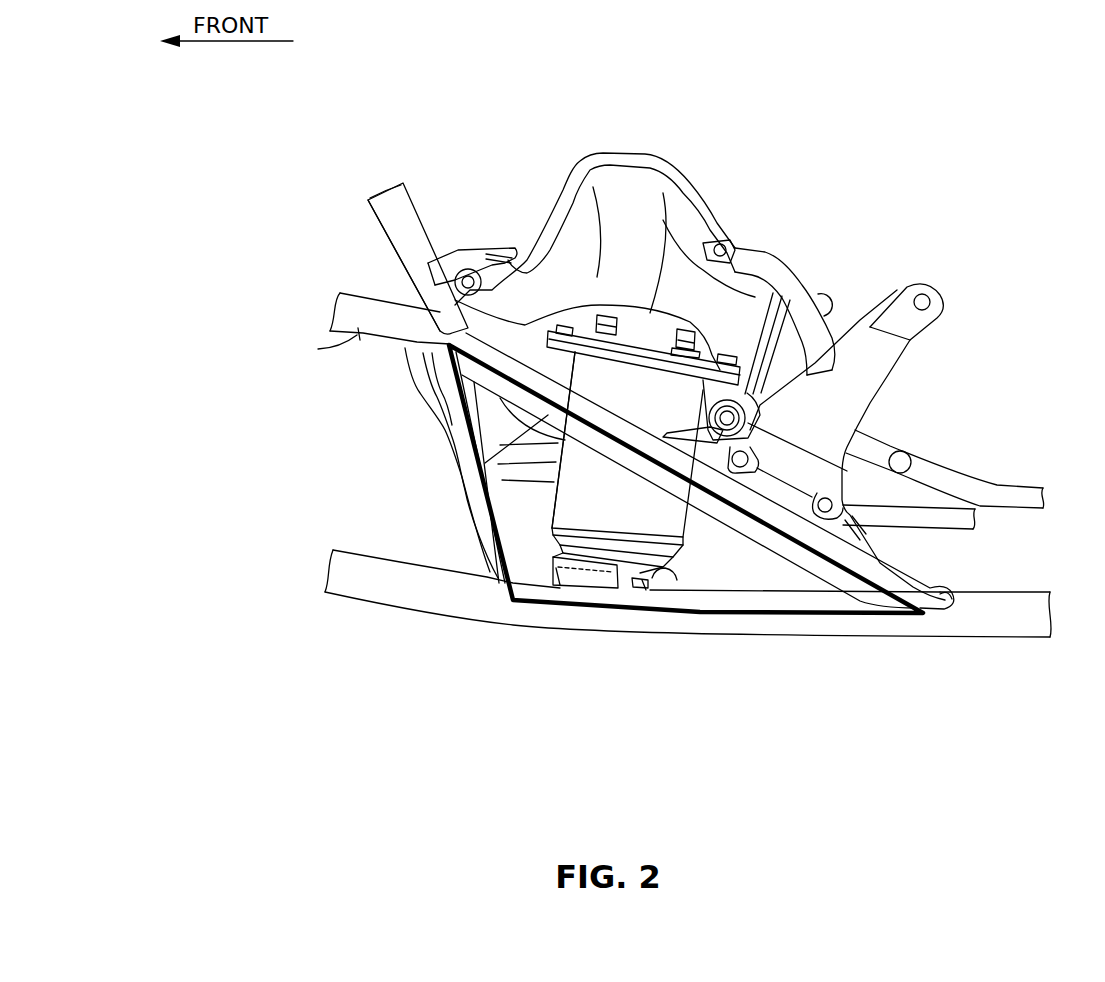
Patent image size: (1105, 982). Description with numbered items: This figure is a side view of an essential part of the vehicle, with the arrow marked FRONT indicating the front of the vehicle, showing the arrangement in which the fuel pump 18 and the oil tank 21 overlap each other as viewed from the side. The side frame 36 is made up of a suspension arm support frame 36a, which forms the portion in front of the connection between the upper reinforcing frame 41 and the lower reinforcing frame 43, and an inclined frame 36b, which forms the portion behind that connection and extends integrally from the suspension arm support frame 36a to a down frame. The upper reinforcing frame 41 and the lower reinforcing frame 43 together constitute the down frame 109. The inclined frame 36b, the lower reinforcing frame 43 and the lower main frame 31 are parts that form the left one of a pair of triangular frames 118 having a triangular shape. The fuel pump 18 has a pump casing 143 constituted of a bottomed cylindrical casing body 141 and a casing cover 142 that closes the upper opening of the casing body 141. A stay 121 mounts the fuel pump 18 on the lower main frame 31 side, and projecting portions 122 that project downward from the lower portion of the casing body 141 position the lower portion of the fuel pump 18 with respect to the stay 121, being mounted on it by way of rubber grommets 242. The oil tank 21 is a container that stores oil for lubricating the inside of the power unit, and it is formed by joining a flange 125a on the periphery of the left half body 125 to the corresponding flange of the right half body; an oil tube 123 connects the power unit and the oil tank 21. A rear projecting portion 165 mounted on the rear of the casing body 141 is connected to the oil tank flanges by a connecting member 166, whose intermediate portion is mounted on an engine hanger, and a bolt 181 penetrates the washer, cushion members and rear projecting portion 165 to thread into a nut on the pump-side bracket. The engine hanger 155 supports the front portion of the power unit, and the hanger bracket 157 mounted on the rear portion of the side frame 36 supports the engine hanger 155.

The fuel pump 18 is at (694, 547).
The oil tank 21 is at (657, 145).
The lower main frame 31 is at (393, 590).
The side frame 36 is at (360, 303).
The suspension arm support frame 36a is at (340, 344).
The inclined frame 36b is at (485, 463).
The upper reinforcing frame 41 is at (402, 207).
The lower reinforcing frame 43 is at (467, 447).
The down frame 109 is at (367, 225).
The triangular frame 118 is at (909, 649).
The stay 121 is at (593, 580).
The projecting portion 122 is at (577, 585).
The oil tube 123 is at (778, 270).
The left half body 125 is at (623, 190).
The flange 125a is at (560, 207).
The casing body 141 is at (520, 587).
The casing cover 142 is at (650, 330).
The pump casing 143 is at (540, 502).
The engine hanger 155 is at (890, 363).
The hanger bracket 157 is at (863, 547).
The rear projecting portion 165 is at (705, 440).
The connecting member 166 is at (800, 352).
The bolt 181 is at (762, 455).
The rubber grommet 242 is at (567, 548).